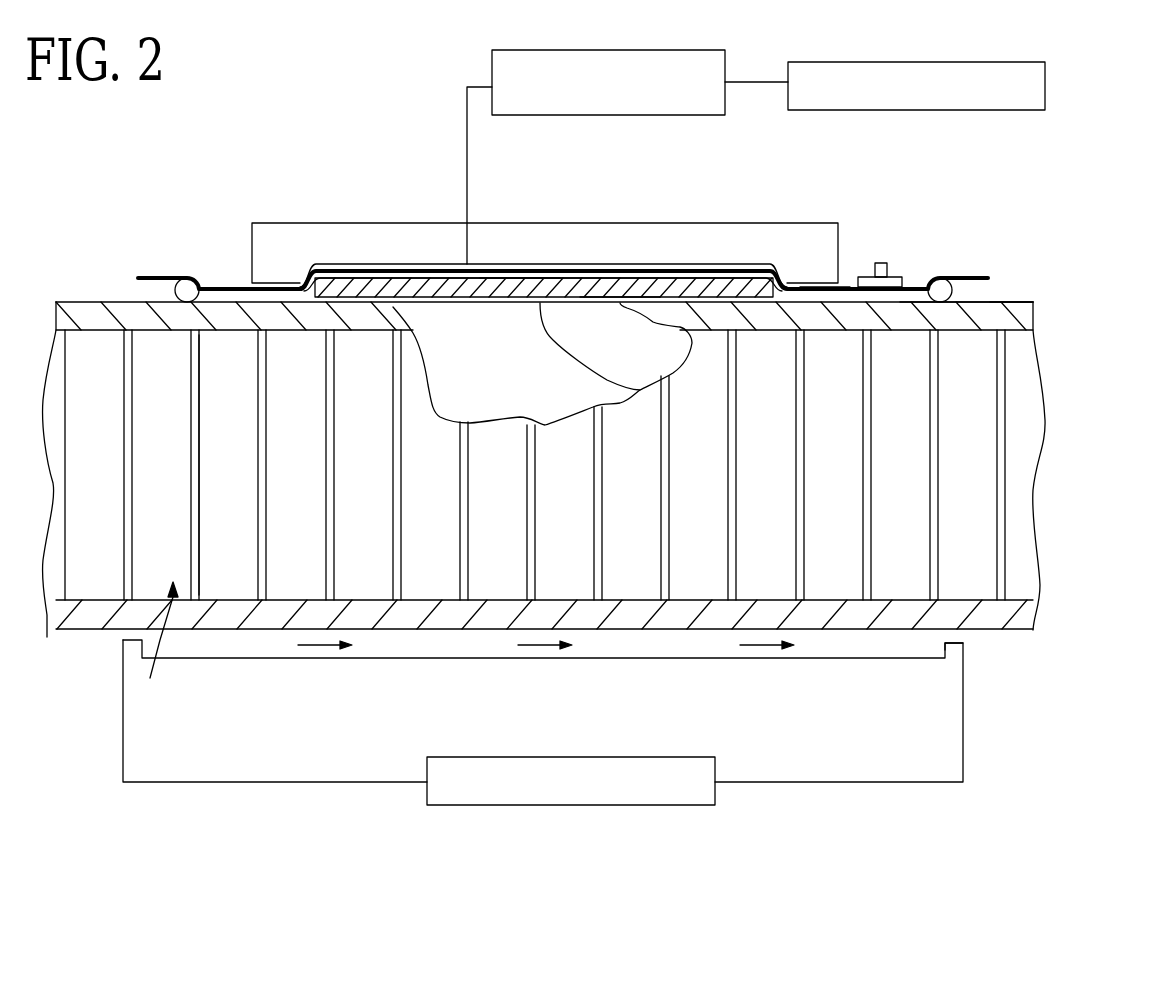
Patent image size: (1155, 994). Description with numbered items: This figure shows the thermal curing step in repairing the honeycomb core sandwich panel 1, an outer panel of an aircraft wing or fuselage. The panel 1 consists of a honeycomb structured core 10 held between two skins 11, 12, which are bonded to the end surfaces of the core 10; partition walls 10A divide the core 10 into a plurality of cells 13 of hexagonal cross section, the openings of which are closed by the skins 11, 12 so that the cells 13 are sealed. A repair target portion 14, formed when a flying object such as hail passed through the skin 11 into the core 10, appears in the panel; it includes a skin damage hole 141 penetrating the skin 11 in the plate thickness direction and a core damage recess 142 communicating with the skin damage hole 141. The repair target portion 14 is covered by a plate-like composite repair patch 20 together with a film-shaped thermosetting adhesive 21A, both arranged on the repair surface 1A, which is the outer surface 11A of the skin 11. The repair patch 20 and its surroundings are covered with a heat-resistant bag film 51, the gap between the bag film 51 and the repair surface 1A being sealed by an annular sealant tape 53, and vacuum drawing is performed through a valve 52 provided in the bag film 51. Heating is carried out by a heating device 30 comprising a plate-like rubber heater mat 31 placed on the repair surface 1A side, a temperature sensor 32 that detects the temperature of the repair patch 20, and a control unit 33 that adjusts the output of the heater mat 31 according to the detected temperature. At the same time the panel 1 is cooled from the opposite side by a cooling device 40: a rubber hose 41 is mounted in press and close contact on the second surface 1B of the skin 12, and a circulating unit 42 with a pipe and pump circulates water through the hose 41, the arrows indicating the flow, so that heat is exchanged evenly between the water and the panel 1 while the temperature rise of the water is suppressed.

The honeycomb core sandwich panel 1 is at (1013, 282).
The repair surface 1A is at (843, 287).
The second surface 1B is at (825, 630).
The core 10 is at (1043, 444).
The partition walls 10A is at (203, 575).
The skin 11 is at (1033, 300).
The upper surface of upper plate 11A is at (1000, 302).
The skin 12 is at (1018, 630).
The cells 13 is at (160, 648).
The repair target portion 14 is at (648, 172).
The skin damage hole 141 is at (627, 308).
The core damage recess 142 is at (540, 302).
The repair patch 20 is at (563, 232).
The thermosetting adhesive 21A is at (400, 278).
The heating device 30 is at (707, 138).
The heater mat 31 is at (255, 222).
The temperature sensor 32 is at (591, 50).
The control unit 33 is at (829, 62).
The cooling device 40 is at (543, 745).
The hose 41 is at (573, 660).
The circulating unit 42 is at (598, 757).
The bag film 51 is at (236, 287).
The valve 52 is at (890, 277).
The sealant tape 53 is at (186, 278).